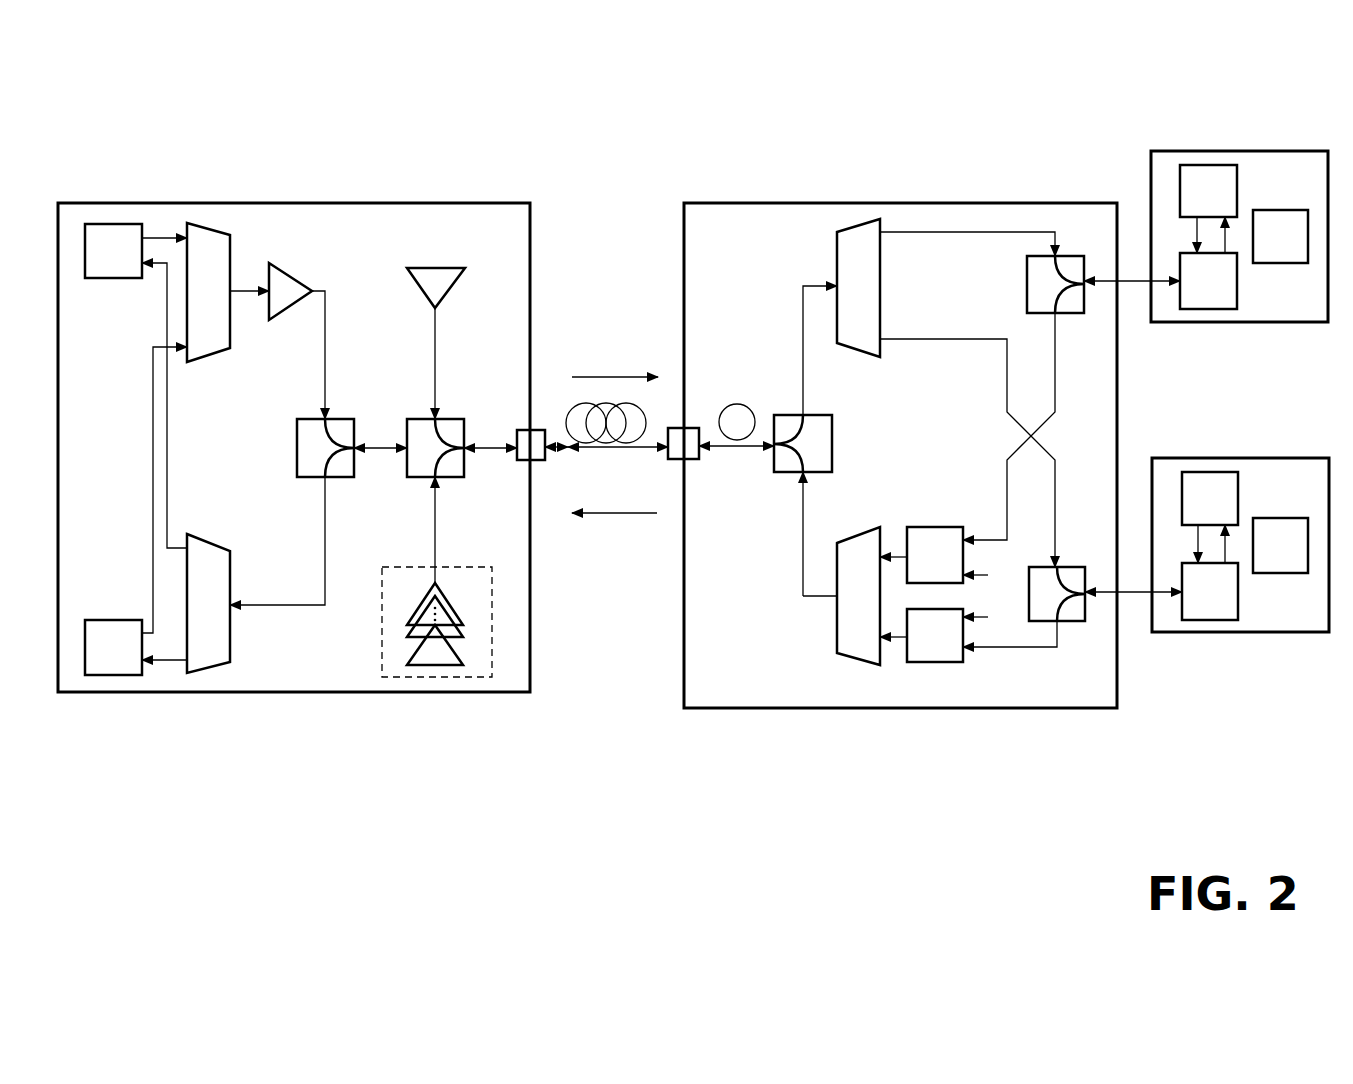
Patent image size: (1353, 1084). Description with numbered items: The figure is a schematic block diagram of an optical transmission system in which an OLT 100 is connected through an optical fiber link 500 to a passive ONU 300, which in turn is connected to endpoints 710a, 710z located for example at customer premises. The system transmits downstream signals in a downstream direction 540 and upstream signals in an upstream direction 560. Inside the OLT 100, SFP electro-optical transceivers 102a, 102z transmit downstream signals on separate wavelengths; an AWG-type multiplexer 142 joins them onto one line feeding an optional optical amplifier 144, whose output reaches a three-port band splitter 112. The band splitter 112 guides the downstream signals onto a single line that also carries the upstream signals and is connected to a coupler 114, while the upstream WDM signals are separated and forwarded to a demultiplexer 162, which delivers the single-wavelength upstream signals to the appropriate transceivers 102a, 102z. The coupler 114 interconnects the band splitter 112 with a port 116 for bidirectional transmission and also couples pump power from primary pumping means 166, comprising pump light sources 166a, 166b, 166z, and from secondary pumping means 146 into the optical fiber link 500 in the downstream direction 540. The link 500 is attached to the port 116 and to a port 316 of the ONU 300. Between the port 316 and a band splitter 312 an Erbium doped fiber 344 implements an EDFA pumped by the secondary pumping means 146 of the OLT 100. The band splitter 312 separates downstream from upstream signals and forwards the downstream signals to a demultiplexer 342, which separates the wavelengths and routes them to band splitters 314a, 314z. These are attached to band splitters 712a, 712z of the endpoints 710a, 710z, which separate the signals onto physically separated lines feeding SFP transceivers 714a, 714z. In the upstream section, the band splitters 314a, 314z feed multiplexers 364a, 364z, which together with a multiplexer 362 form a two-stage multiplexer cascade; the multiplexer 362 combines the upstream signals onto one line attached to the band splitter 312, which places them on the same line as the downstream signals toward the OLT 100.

The OLT 100 is at (80, 203).
The electro-optical transceiver 102a is at (120, 224).
The electro-optical transceiver 102z is at (112, 675).
The multiplexer 142 is at (200, 223).
The optical amplifier 144 is at (290, 268).
The secondary pumping means 146 is at (435, 268).
The band splitter 112 is at (345, 419).
The coupler 114 is at (454, 419).
The port 116 is at (540, 430).
The demultiplexer 162 is at (204, 673).
The primary pumping means 166 is at (382, 645).
The pump light source 166a is at (455, 610).
The pump light source 166b is at (462, 633).
The pump light source 166z is at (438, 665).
The optical fiber link 500 is at (676, 460).
The downstream direction 540 is at (617, 377).
The upstream direction 560 is at (617, 513).
The ONU 300 is at (726, 203).
The port 316 is at (676, 428).
The Erbium doped fiber 344 is at (748, 404).
The demultiplexer 342 is at (870, 219).
The band splitter 312 is at (785, 475).
The band splitter 314a is at (1072, 256).
The band splitter 314z is at (1070, 621).
The multiplexer 362 is at (858, 665).
The multiplexer 364a is at (940, 662).
The multiplexer 364z is at (963, 555).
The endpoint 710a is at (1300, 151).
The endpoint 710z is at (1305, 458).
The transceiver 714a is at (1210, 165).
The transceiver 714z is at (1192, 472).
The band splitter 712a is at (1220, 309).
The band splitter 712z is at (1213, 620).